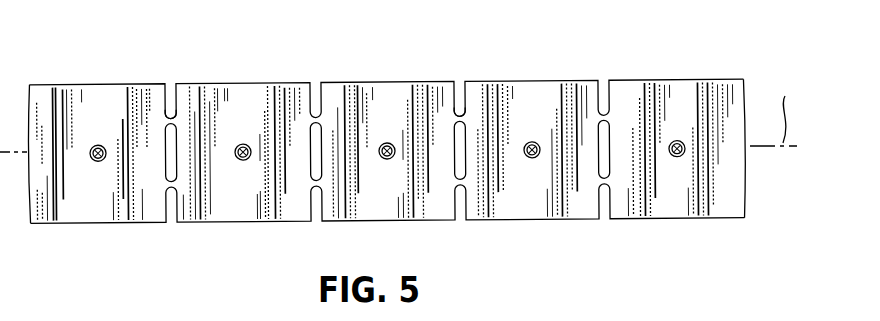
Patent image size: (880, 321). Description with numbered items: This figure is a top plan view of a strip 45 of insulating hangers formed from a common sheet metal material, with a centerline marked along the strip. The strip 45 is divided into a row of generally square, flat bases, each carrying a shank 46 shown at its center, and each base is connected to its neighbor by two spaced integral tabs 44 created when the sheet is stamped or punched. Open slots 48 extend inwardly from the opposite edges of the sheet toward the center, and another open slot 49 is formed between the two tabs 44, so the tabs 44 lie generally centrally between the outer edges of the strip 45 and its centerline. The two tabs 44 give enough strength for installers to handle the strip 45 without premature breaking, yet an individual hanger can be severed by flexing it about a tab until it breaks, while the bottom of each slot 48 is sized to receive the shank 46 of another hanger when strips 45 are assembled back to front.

The integral tab 44 is at (167, 117).
The strip of hangers 45 is at (66, 240).
The shank 46 is at (536, 142).
The open slot 48 is at (172, 117).
The open slot 49 is at (172, 155).